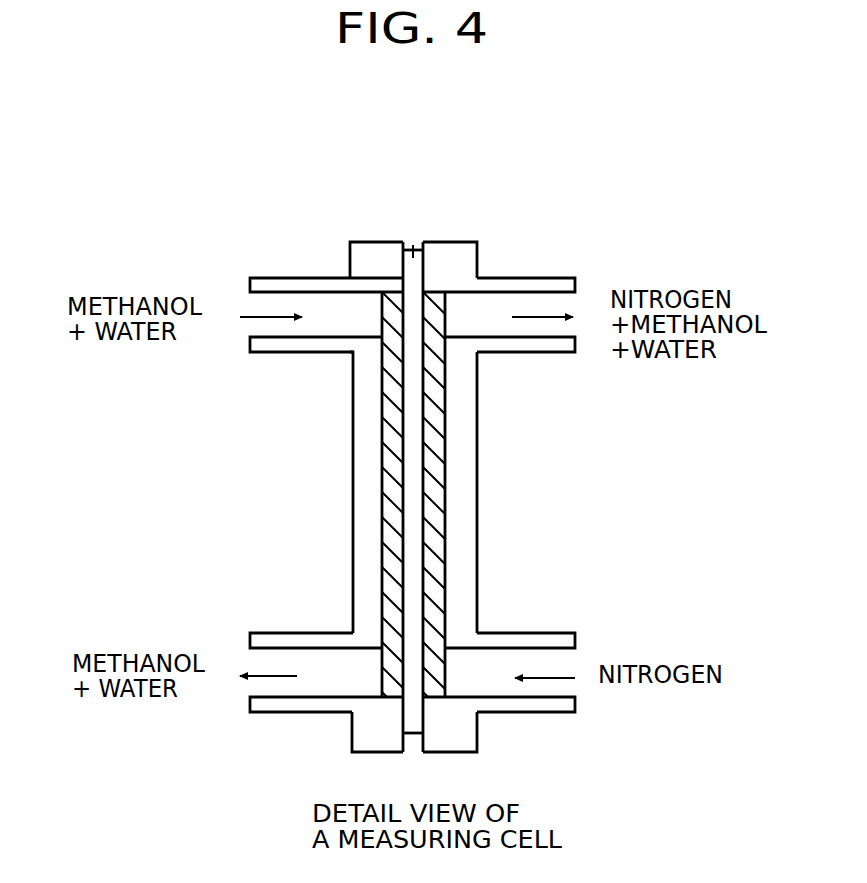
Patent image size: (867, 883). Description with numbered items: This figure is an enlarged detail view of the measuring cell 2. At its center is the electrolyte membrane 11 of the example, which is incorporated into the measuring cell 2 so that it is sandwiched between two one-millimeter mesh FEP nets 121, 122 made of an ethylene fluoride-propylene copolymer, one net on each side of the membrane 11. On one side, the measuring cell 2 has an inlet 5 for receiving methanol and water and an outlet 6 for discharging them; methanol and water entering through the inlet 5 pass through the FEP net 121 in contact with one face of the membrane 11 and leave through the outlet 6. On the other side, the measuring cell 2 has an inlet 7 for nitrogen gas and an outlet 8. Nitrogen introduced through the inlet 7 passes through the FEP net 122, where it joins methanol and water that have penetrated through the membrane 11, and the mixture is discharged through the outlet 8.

The measuring cell 2 is at (460, 220).
The inlet 5 is at (250, 300).
The outlet 6 is at (247, 685).
The inlet 7 is at (577, 690).
The outlet 8 is at (573, 310).
The electrolyte membrane 11 is at (412, 248).
The FEP net 121 is at (387, 480).
The FEP net 122 is at (440, 470).